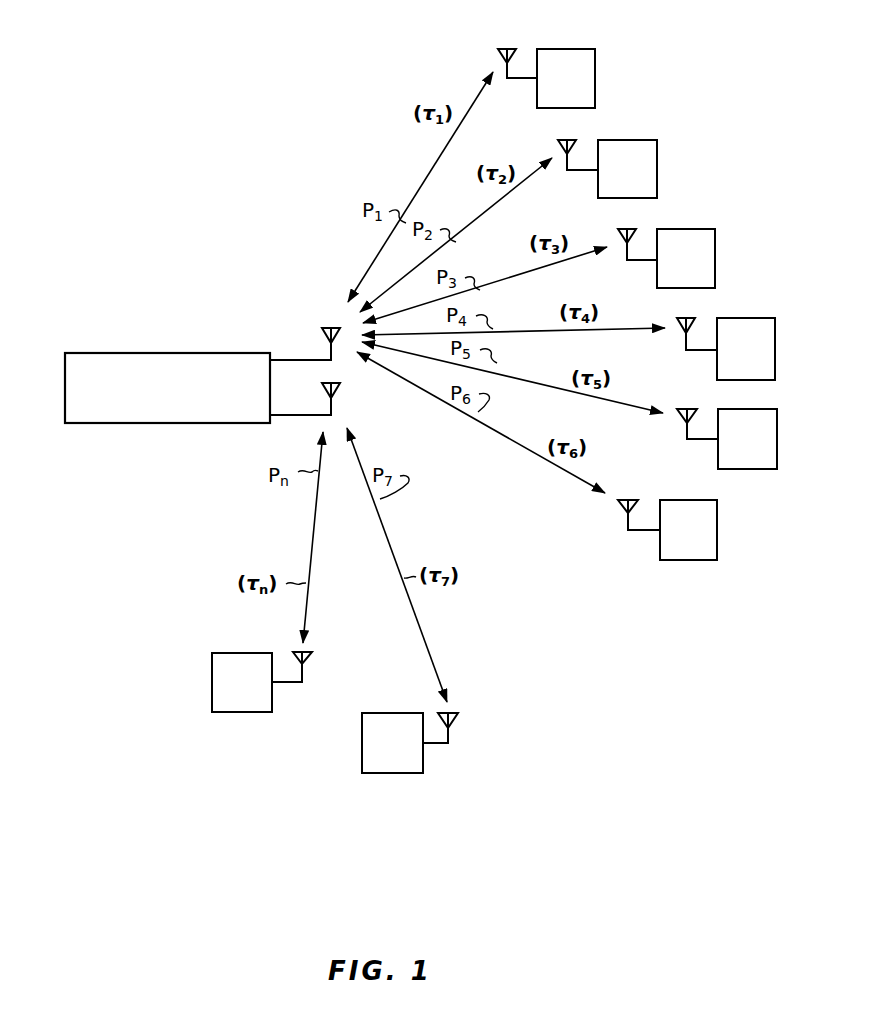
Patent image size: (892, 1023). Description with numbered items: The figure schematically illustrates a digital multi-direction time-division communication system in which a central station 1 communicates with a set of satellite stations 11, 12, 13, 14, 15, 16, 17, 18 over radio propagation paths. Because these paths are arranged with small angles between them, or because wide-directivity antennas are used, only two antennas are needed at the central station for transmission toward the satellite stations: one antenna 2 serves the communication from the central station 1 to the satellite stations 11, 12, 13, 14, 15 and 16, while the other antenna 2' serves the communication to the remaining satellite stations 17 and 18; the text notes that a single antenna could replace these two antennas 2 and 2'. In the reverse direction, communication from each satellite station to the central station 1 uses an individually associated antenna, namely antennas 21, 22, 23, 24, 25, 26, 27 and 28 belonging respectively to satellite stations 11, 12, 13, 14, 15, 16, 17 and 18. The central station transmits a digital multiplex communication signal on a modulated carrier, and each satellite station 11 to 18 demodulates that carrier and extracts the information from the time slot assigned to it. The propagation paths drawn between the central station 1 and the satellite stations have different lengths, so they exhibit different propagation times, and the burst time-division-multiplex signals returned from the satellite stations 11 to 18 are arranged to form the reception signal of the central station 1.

The central station 1 is at (78, 353).
The antenna 2 is at (305, 330).
The antenna 2' is at (321, 399).
The satellite station 11 is at (585, 50).
The satellite station 12 is at (646, 141).
The satellite station 13 is at (703, 230).
The satellite station 14 is at (763, 319).
The satellite station 15 is at (766, 410).
The satellite station 16 is at (718, 507).
The satellite station 17 is at (404, 773).
The satellite station 18 is at (234, 712).
The antenna 21 is at (506, 50).
The antenna 22 is at (566, 141).
The antenna 23 is at (630, 230).
The antenna 24 is at (686, 319).
The antenna 25 is at (692, 410).
The antenna 26 is at (626, 501).
The antenna 27 is at (456, 714).
The antenna 28 is at (311, 657).